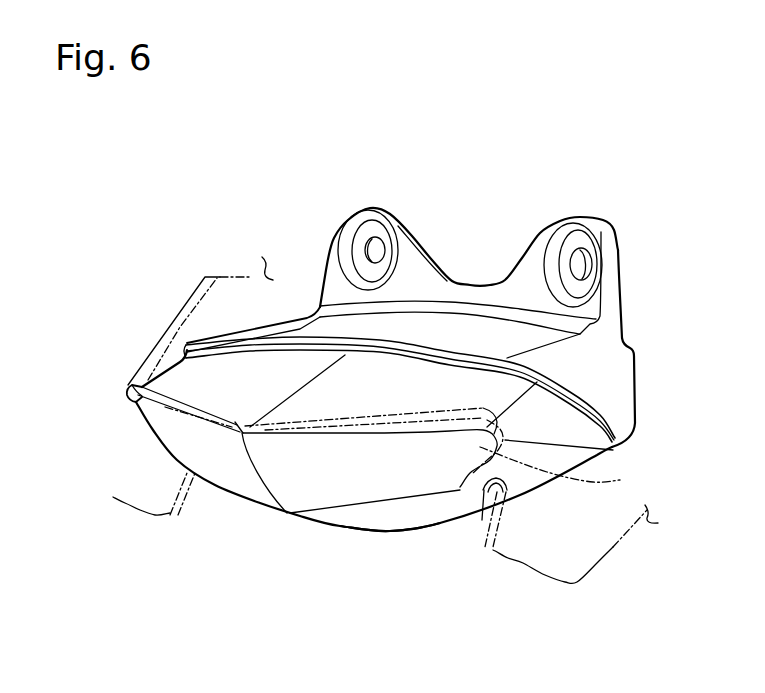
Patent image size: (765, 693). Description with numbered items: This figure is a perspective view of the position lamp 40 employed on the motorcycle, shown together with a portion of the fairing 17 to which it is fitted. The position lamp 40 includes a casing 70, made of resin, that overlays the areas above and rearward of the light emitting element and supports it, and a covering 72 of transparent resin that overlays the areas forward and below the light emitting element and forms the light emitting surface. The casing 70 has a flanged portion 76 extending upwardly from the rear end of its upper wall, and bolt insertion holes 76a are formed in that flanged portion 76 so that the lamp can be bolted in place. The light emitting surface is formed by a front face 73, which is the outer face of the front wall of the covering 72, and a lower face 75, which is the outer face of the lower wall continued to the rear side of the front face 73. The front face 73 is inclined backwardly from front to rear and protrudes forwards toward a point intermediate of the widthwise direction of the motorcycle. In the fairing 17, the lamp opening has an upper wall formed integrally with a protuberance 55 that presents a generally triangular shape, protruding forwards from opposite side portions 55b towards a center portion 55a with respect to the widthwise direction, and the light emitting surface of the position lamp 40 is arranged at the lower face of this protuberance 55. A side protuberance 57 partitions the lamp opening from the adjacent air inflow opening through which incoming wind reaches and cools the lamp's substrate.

The position lamp 40 is at (590, 163).
The flanged portion 76 is at (618, 285).
The bolt insertion holes 76a is at (379, 240).
The casing 70 is at (627, 390).
The covering 72 is at (137, 411).
The fairing 17 is at (208, 277).
The protuberance 55 is at (243, 407).
The center portion 55a is at (230, 430).
The side portions 55b is at (620, 480).
The front face 73 is at (238, 490).
The lower face 75 is at (412, 513).
The side protuberance 57 is at (483, 477).